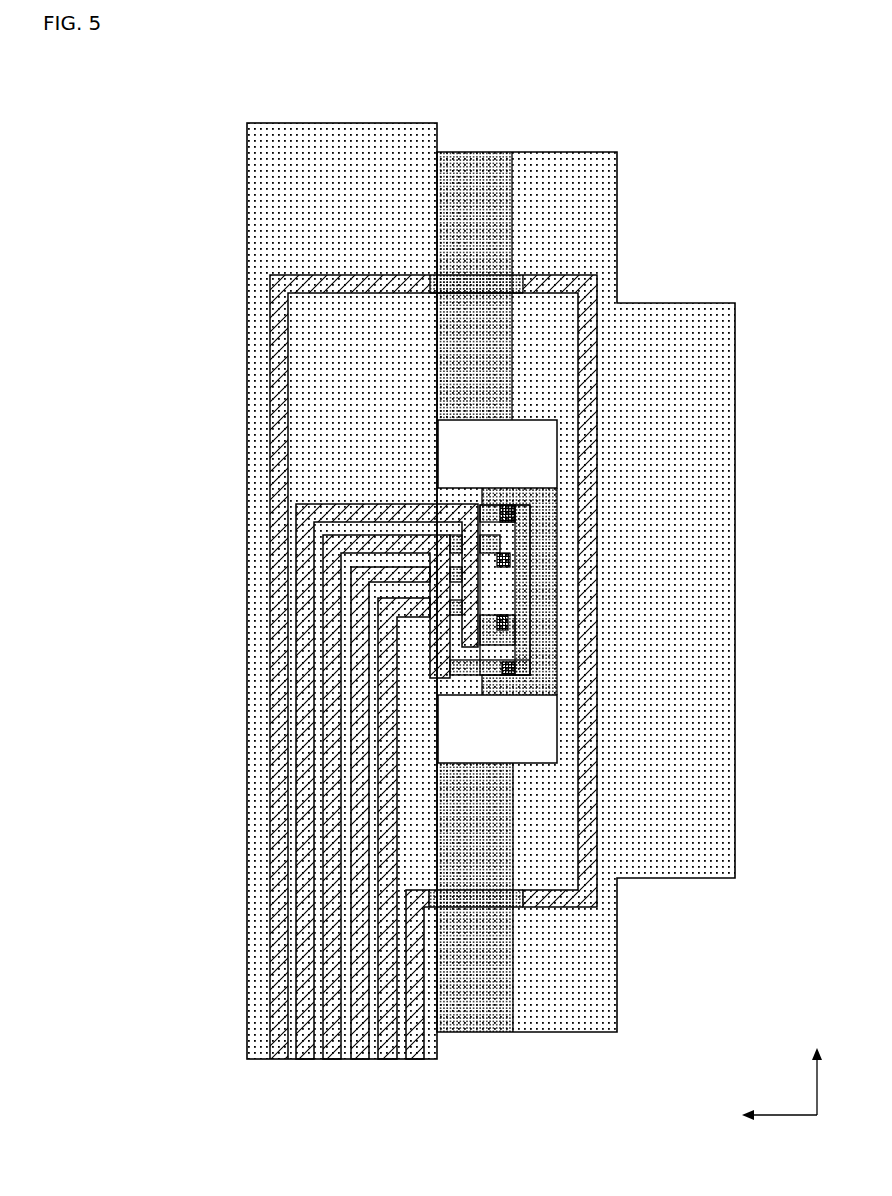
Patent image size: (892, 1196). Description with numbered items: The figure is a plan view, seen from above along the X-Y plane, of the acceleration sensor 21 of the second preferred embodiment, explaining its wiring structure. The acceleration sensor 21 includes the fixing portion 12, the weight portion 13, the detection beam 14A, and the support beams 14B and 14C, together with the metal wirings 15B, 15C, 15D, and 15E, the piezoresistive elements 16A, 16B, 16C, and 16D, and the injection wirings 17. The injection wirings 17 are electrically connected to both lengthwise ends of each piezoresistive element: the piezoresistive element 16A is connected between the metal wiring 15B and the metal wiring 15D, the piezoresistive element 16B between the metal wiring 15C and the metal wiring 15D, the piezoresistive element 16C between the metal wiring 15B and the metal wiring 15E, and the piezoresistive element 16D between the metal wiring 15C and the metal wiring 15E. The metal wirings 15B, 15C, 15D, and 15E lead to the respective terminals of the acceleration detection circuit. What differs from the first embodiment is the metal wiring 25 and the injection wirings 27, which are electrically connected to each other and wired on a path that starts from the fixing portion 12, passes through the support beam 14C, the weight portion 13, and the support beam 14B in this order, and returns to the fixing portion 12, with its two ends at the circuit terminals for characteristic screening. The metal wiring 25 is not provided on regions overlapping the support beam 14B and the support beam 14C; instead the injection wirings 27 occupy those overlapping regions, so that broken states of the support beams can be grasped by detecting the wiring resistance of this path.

The acceleration sensor 21 is at (214, 88).
The fixing portion 12 is at (247, 156).
The weight portion 13 is at (612, 162).
The detection beam 14A is at (525, 488).
The support beam 14B is at (486, 769).
The support beam 14C is at (484, 160).
The injection wirings 27 is at (470, 286).
The metal wiring 25 is at (278, 613).
The metal wiring 15B is at (305, 640).
The metal wiring 15C is at (332, 669).
The metal wiring 15D is at (358, 696).
The metal wiring 15E is at (388, 722).
The injection wirings 17 is at (510, 508).
The piezoresistive element 16A is at (528, 513).
The piezoresistive element 16B is at (532, 563).
The piezoresistive element 16C is at (530, 625).
The piezoresistive element 16D is at (528, 672).